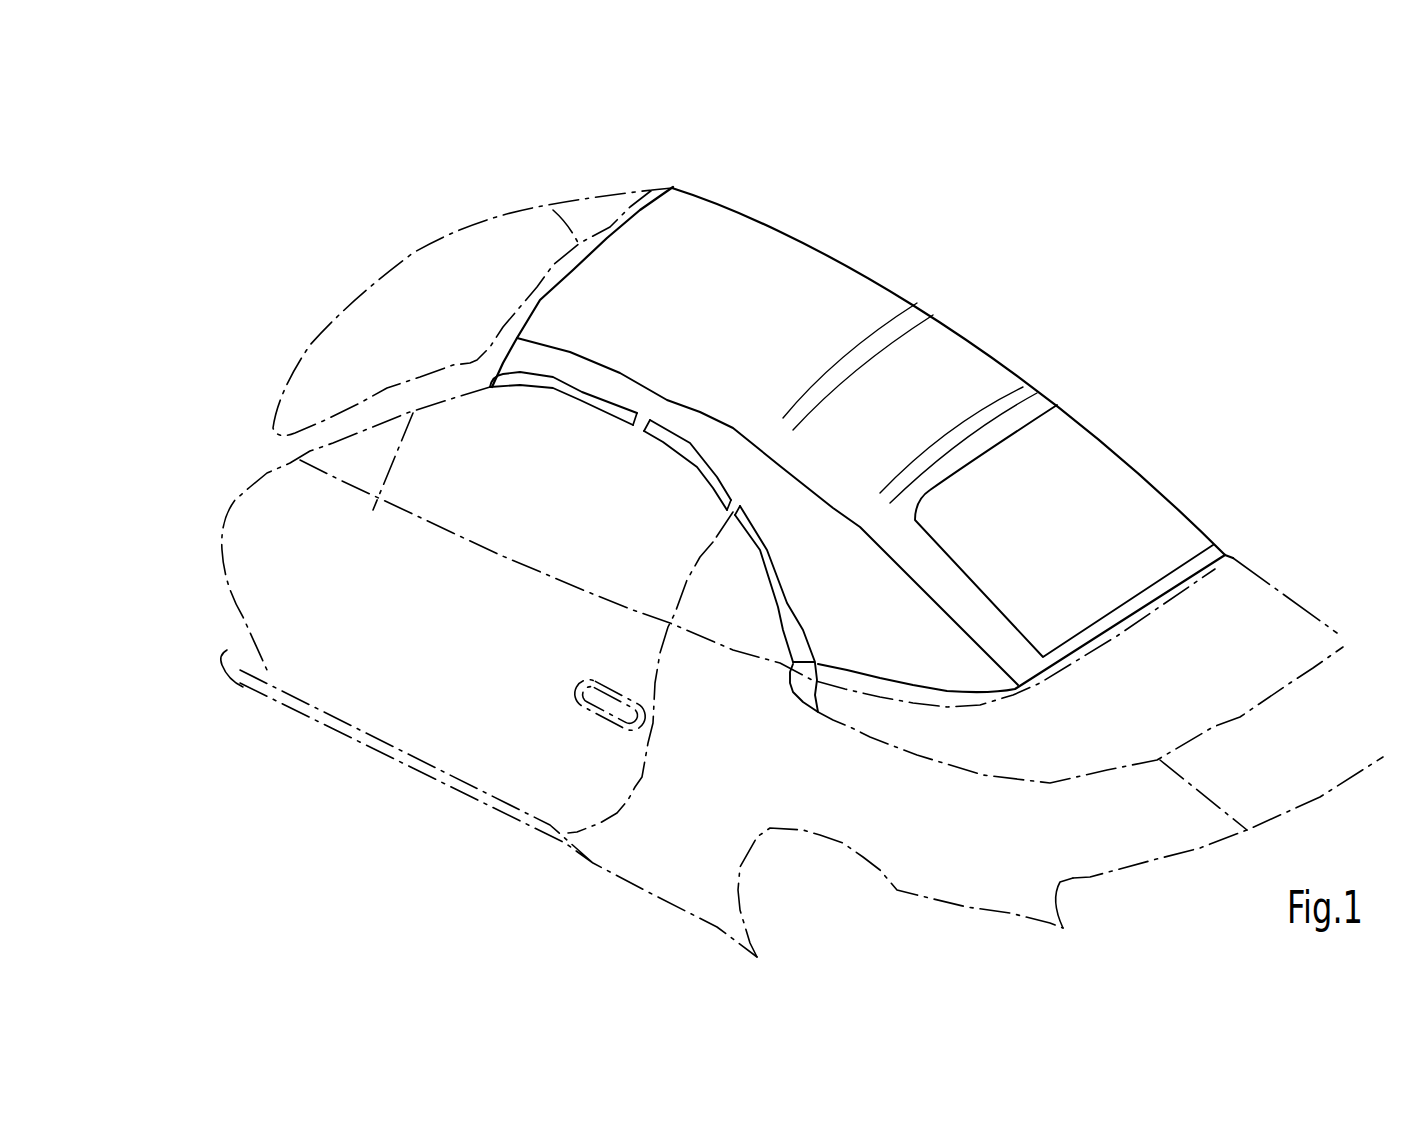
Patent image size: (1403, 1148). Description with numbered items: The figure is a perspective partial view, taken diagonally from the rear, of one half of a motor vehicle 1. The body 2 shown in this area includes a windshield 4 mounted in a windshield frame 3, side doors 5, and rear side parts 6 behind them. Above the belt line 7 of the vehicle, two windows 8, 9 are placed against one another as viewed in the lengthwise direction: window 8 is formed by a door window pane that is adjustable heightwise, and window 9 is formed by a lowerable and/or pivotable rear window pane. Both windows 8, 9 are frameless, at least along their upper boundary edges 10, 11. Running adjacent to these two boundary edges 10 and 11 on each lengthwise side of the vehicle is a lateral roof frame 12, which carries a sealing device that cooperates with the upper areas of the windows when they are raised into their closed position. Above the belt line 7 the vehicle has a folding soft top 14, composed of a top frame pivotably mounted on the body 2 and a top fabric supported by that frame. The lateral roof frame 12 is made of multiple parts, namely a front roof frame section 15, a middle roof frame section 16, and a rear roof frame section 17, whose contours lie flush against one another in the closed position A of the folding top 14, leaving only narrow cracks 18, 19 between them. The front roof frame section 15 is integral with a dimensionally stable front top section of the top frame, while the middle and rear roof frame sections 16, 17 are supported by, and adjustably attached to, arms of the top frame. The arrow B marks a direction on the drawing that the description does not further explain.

The motor vehicle 1 is at (1117, 443).
The body 2 is at (657, 184).
The windshield frame 3 is at (553, 210).
The windshield 4 is at (381, 258).
The side doors 5 is at (659, 748).
The rear side parts 6 is at (813, 800).
The belt line 7 is at (492, 561).
The window 8 is at (600, 570).
The window 9 is at (740, 551).
The upper boundary edge 10 is at (654, 442).
The upper boundary edge 11 is at (769, 588).
The lateral roof frame 12 is at (716, 495).
The folding soft top 14 is at (1025, 370).
The front roof frame section 15 is at (583, 396).
The middle roof frame section 16 is at (688, 455).
The rear roof frame section 17 is at (801, 628).
The crack 18 is at (651, 420).
The crack 19 is at (742, 506).
The closed position A is at (835, 246).
The forward driving direction B is at (702, 151).